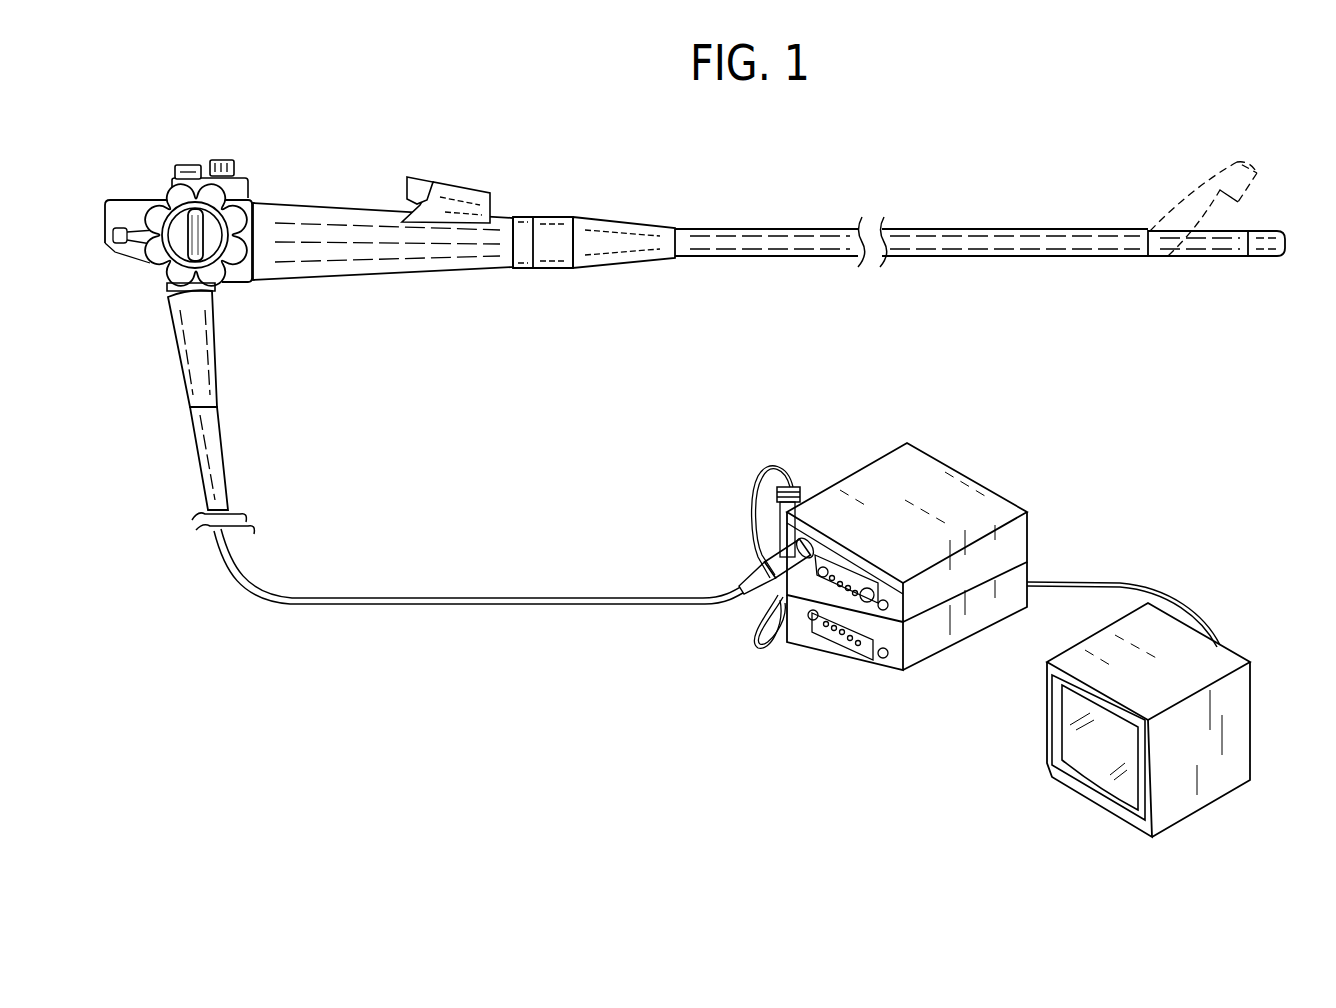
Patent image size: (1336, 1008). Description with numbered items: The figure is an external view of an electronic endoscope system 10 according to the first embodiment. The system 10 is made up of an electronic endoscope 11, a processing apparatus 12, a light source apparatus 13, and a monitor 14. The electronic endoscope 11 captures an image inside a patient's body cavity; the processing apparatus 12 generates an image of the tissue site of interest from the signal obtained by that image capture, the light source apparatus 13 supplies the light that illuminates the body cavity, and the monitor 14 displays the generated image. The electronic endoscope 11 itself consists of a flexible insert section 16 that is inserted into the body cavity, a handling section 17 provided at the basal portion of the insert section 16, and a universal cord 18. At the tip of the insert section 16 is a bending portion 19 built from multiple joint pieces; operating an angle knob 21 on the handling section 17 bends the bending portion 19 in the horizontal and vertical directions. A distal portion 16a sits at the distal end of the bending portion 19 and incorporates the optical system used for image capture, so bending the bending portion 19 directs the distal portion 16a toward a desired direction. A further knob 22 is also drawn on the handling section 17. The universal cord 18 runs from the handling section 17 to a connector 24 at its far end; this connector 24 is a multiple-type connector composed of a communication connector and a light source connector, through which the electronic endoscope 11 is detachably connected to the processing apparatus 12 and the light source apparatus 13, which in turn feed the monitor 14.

The electronic endoscope system 10 is at (497, 668).
The electronic endoscope 11 is at (390, 257).
The processing apparatus 12 is at (918, 650).
The light source apparatus 13 is at (920, 485).
The monitor 14 is at (1097, 777).
The insert section 16 is at (973, 245).
The distal portion 16a is at (1265, 262).
The handling section 17 is at (377, 271).
The universal cord 18 is at (213, 440).
The bending portion 19 is at (1193, 262).
The angle knob 21 is at (198, 170).
The angle knob 22 is at (403, 186).
The connector 24 is at (738, 578).